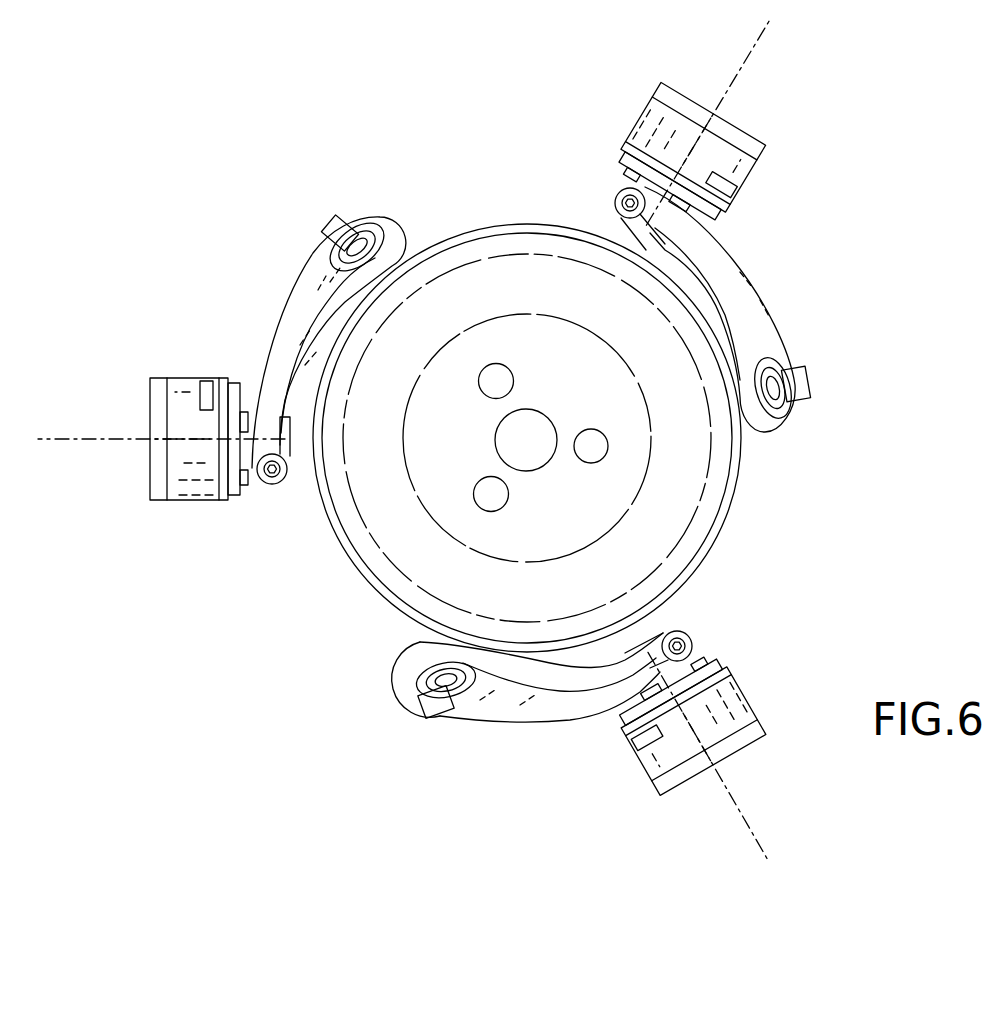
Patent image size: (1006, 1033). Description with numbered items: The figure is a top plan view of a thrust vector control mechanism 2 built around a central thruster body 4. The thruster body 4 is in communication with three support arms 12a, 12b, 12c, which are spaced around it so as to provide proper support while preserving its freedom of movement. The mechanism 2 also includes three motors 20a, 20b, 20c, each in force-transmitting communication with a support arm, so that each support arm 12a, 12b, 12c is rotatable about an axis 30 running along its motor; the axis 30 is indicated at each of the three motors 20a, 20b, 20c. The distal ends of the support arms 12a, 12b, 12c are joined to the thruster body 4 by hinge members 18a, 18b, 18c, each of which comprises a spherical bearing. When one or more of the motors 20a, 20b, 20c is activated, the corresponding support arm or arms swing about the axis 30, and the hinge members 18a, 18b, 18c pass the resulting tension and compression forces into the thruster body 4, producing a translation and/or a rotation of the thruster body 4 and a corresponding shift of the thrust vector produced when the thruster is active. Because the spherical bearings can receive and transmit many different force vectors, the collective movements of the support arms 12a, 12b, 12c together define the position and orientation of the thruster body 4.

The thrust vector control mechanism 2 is at (824, 161).
The thruster body 4 is at (465, 280).
The support arm 12a is at (263, 315).
The support arm 12b is at (501, 730).
The support arm 12c is at (780, 295).
The hinge member 18a is at (318, 245).
The hinge member 18b is at (407, 690).
The hinge member 18c is at (792, 423).
The motor 20a is at (146, 464).
The motor 20b is at (674, 812).
The motor 20c is at (759, 123).
The axis 30 is at (771, 39).